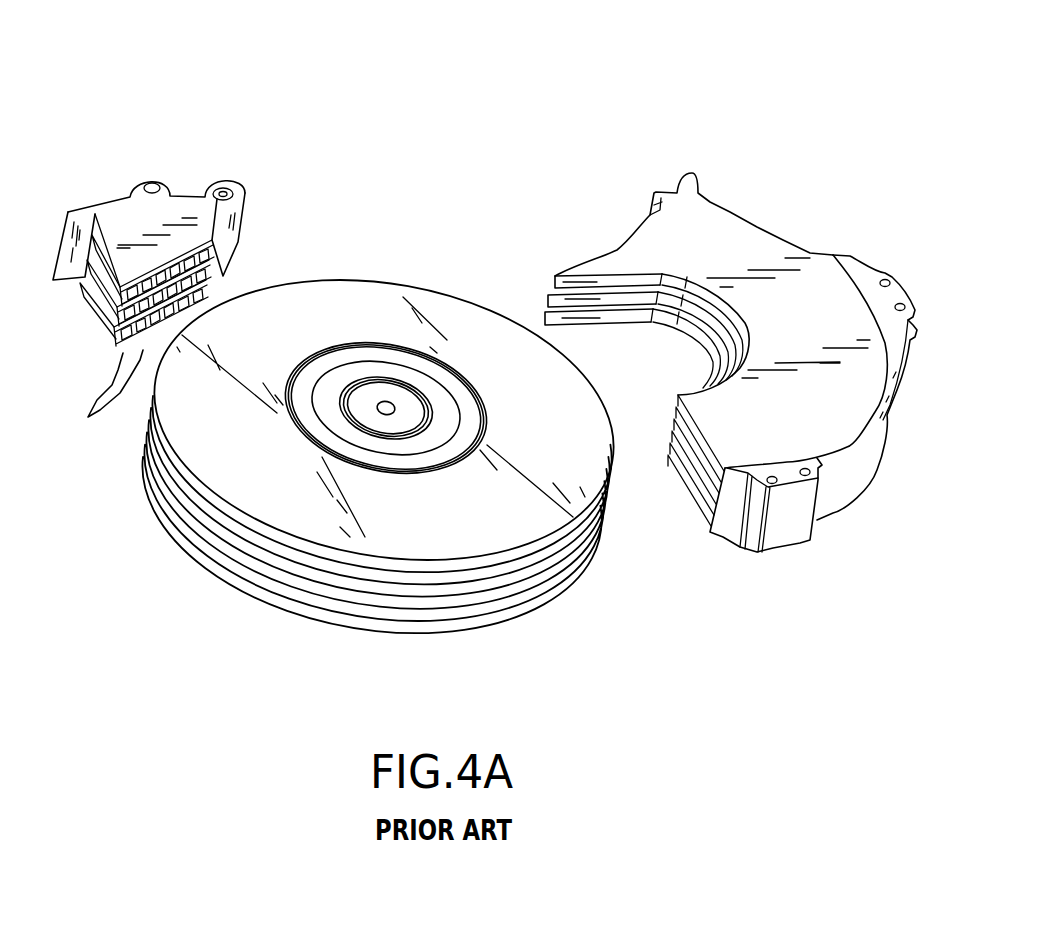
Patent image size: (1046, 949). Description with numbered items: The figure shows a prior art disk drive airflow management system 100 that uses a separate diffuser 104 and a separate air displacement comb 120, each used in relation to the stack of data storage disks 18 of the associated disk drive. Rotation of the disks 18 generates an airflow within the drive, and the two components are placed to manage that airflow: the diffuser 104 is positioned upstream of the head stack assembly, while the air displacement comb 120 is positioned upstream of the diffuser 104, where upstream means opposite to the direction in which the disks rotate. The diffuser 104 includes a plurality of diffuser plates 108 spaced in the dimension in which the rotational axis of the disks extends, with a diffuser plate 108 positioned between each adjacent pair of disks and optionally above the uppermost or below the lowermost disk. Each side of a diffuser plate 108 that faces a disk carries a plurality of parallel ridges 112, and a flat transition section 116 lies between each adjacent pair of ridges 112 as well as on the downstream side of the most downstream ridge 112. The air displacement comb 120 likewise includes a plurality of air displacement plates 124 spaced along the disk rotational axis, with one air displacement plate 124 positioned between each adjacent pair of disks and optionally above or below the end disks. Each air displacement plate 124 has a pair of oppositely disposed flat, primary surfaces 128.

The disk drive airflow management system 100 is at (497, 101).
The disks 18 is at (287, 560).
The diffuser 104 is at (240, 187).
The flat transition section 116 is at (138, 290).
The diffuser plate 108 is at (125, 312).
The parallel ridges 112 is at (104, 401).
The air displacement comb 120 is at (740, 215).
The air displacement plate 124 is at (545, 317).
The flat primary surfaces 128 is at (773, 242).